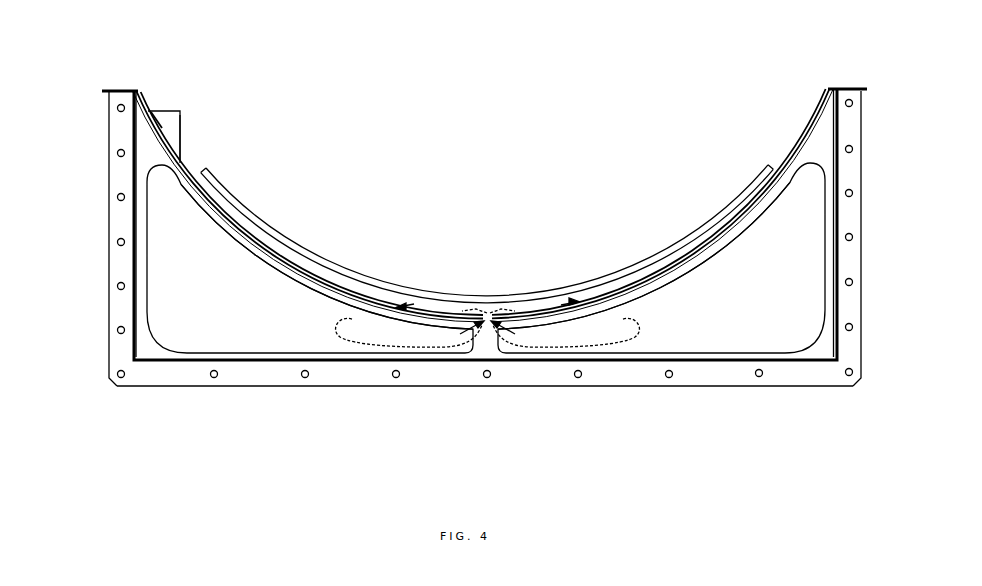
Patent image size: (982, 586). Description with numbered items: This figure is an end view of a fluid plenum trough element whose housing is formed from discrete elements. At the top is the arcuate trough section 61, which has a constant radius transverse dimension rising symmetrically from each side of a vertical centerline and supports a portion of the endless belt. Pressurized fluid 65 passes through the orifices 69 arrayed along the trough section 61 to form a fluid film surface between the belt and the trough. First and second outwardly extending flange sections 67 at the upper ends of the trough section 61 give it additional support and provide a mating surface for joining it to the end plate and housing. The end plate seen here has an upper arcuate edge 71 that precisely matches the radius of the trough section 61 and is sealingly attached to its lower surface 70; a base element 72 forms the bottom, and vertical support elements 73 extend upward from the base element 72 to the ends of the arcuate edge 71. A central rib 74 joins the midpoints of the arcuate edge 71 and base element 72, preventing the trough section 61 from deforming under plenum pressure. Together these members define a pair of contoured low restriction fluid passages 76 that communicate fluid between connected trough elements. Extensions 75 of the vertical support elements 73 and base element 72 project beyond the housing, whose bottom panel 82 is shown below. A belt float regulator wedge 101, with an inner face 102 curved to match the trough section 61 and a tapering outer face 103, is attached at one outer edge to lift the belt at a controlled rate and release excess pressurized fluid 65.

The trough section 61 is at (824, 101).
The pressurized fluid 65 is at (352, 319).
The outwardly extending flange sections 67 is at (116, 89).
The orifices 69 is at (485, 316).
The lower surface 70 is at (218, 203).
The upper arcuate edge 71 is at (260, 255).
The base element 72 is at (327, 362).
The vertical support elements 73 is at (133, 212).
The central rib 74 is at (487, 347).
The extensions 75 is at (125, 258).
The contoured low restriction fluid passages 76 is at (268, 338).
The bottom panel 82 is at (425, 362).
The belt float regulator wedge 101 is at (167, 110).
The inner face 102 is at (158, 127).
The outer face 103 is at (182, 135).